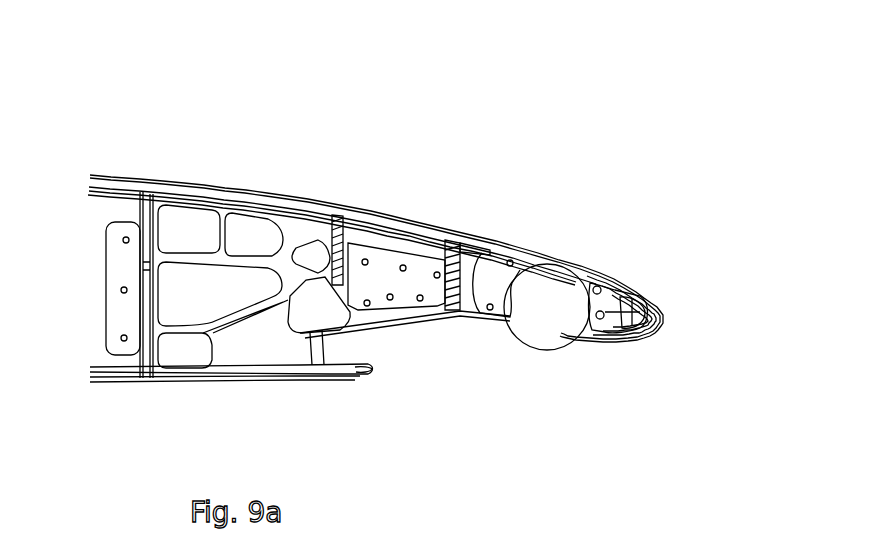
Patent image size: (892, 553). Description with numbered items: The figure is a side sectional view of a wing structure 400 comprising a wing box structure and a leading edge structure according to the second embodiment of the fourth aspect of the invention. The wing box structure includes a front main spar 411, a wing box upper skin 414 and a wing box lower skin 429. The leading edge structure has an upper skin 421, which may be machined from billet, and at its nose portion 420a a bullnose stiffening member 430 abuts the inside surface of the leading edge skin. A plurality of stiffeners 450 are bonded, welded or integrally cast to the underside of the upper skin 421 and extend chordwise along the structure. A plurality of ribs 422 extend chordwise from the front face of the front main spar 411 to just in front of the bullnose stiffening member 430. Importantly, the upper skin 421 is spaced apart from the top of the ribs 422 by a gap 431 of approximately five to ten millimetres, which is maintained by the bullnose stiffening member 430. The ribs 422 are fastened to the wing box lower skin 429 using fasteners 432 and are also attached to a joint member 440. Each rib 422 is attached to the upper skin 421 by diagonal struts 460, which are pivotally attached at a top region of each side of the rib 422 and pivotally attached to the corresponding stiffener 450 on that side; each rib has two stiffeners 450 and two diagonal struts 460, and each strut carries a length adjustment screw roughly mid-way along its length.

The wing structure 400 is at (557, 158).
The front main spar 411 is at (108, 372).
The wing box upper skin 414 is at (135, 178).
The nose portion 420a is at (663, 312).
The upper skin 421 is at (387, 213).
The ribs 422 is at (440, 315).
The wing box lower skin 429 is at (353, 375).
The bullnose stiffening member 430 is at (650, 330).
The gap 431 is at (260, 197).
The fasteners 432 is at (592, 335).
The joint member 440 is at (208, 190).
The stiffeners 450 is at (405, 243).
The diagonal struts 460 is at (500, 237).